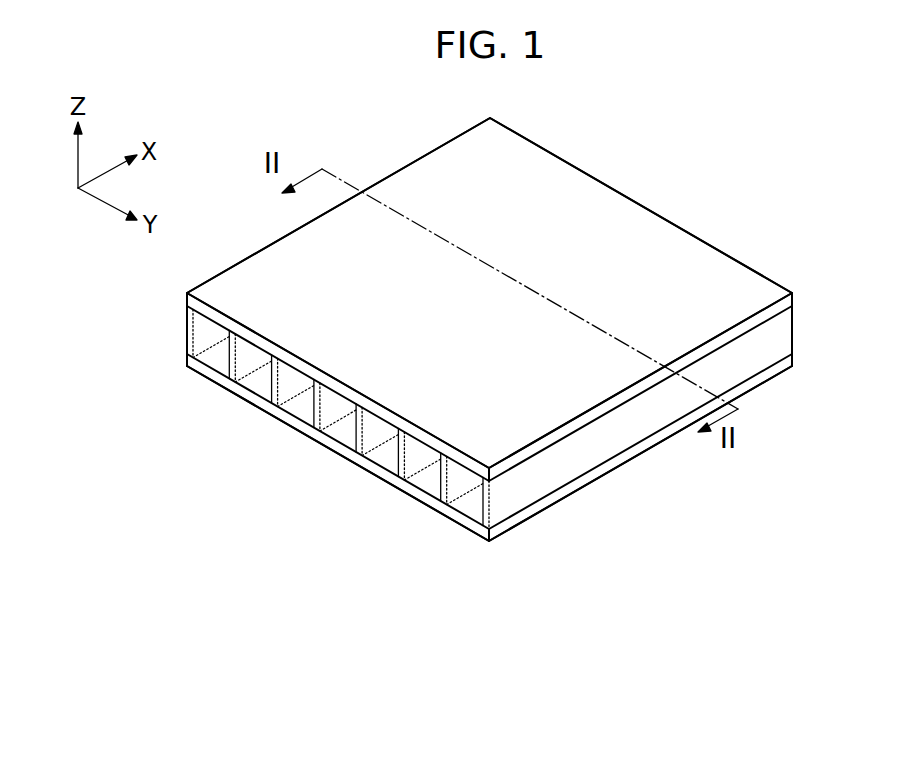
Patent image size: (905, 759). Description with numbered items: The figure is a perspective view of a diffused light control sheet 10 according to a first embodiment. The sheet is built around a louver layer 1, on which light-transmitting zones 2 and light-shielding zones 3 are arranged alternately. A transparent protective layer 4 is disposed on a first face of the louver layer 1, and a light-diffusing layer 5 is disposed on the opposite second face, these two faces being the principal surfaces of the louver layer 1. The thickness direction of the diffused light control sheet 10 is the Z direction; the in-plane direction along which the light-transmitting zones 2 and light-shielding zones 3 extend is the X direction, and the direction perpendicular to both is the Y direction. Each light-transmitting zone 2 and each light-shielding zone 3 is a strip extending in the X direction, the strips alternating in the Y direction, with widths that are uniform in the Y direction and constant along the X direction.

The diffused light control sheet 10 is at (685, 203).
The transparent protective layer 4 is at (188, 300).
The light-diffusing layer 5 is at (327, 442).
The louver layer 1 is at (295, 418).
The light-transmitting zone 2 is at (215, 352).
The light-shielding zone 3 is at (260, 380).